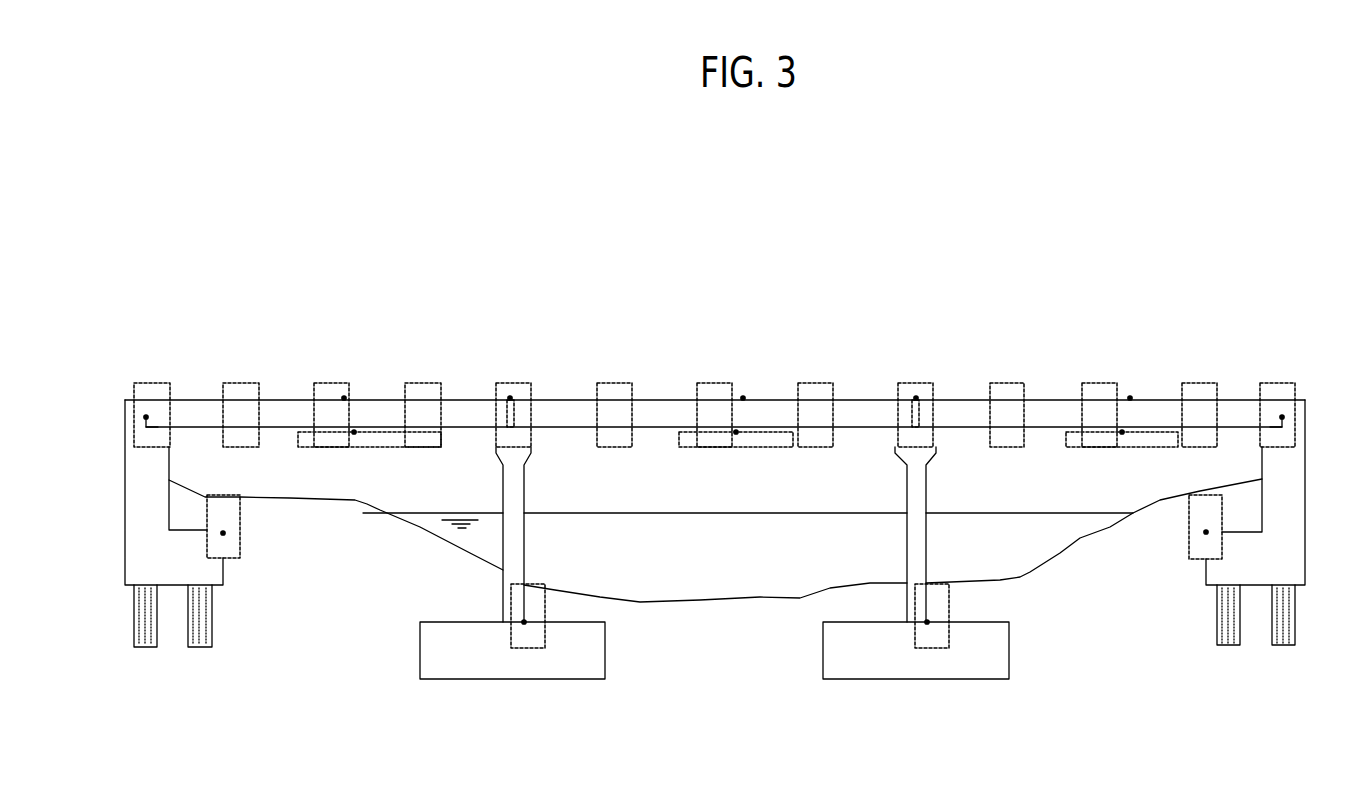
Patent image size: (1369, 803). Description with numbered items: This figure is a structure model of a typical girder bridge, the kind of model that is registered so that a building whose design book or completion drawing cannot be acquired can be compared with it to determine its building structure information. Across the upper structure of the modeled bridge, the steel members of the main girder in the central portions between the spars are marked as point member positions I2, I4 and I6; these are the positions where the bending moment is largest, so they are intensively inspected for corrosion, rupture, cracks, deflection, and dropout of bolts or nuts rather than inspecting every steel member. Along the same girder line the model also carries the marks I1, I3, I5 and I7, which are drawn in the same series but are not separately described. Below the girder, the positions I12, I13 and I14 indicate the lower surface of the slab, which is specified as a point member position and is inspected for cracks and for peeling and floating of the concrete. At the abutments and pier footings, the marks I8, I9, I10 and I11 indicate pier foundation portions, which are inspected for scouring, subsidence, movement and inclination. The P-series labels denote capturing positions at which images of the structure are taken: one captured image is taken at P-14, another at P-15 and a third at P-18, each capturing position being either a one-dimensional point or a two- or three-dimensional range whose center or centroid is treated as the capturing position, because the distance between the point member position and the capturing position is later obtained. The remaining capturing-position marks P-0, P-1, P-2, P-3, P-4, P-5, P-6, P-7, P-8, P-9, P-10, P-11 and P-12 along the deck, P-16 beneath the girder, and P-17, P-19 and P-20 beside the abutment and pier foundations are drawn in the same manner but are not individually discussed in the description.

The sensor position P-0 (acceleration sensor) P-0 is at (160, 383).
The sensor position P-1 (acceleration sensor) P-1 is at (242, 383).
The sensor position P-2 (acceleration sensor) P-2 is at (330, 383).
The sensor position P-3 (acceleration sensor) P-3 is at (422, 383).
The sensor position P-4 (acceleration sensor) P-4 is at (522, 383).
The sensor position P-5 (acceleration sensor) P-5 is at (614, 383).
The sensor position P-6 (acceleration sensor) P-6 is at (715, 383).
The sensor position P-7 (acceleration sensor) P-7 is at (815, 383).
The sensor position P-8 (acceleration sensor) P-8 is at (928, 383).
The sensor position P-9 (acceleration sensor) P-9 is at (1008, 383).
The sensor position P-10 (acceleration sensor) P-10 is at (1100, 383).
The sensor position P-11 (acceleration sensor) P-11 is at (1200, 383).
The sensor position P-12 (acceleration sensor) P-12 is at (1290, 383).
The capturing position P-14 is at (380, 447).
The capturing position P-15 is at (765, 447).
The sensor position P-16 (strain sensor on girder) P-16 is at (1147, 447).
The sensor position P-17 (displacement sensor at abutment) P-17 is at (225, 495).
The capturing position P-18 is at (535, 584).
The sensor position P-19 (displacement sensor at pier) P-19 is at (938, 584).
The sensor position P-20 (displacement sensor at abutment) P-20 is at (1198, 559).
The excitation/impact point I1 is at (146, 405).
The steel member position between spars of main girder I2 is at (344, 392).
The excitation/impact point I3 is at (510, 392).
The steel member position between spars of main girder I4 is at (743, 392).
The excitation/impact point I5 is at (916, 392).
The steel member position between spars of main girder I6 is at (1130, 392).
The excitation/impact point I7 is at (1282, 405).
The pier foundation portion position I8 is at (234, 533).
The pier foundation portion position I9 is at (528, 640).
The pier foundation portion position I10 is at (931, 640).
The pier foundation portion position I11 is at (1196, 532).
The lower surface of slab position I12 is at (358, 455).
The lower surface of slab position I13 is at (740, 455).
The lower surface of slab position I14 is at (1126, 455).